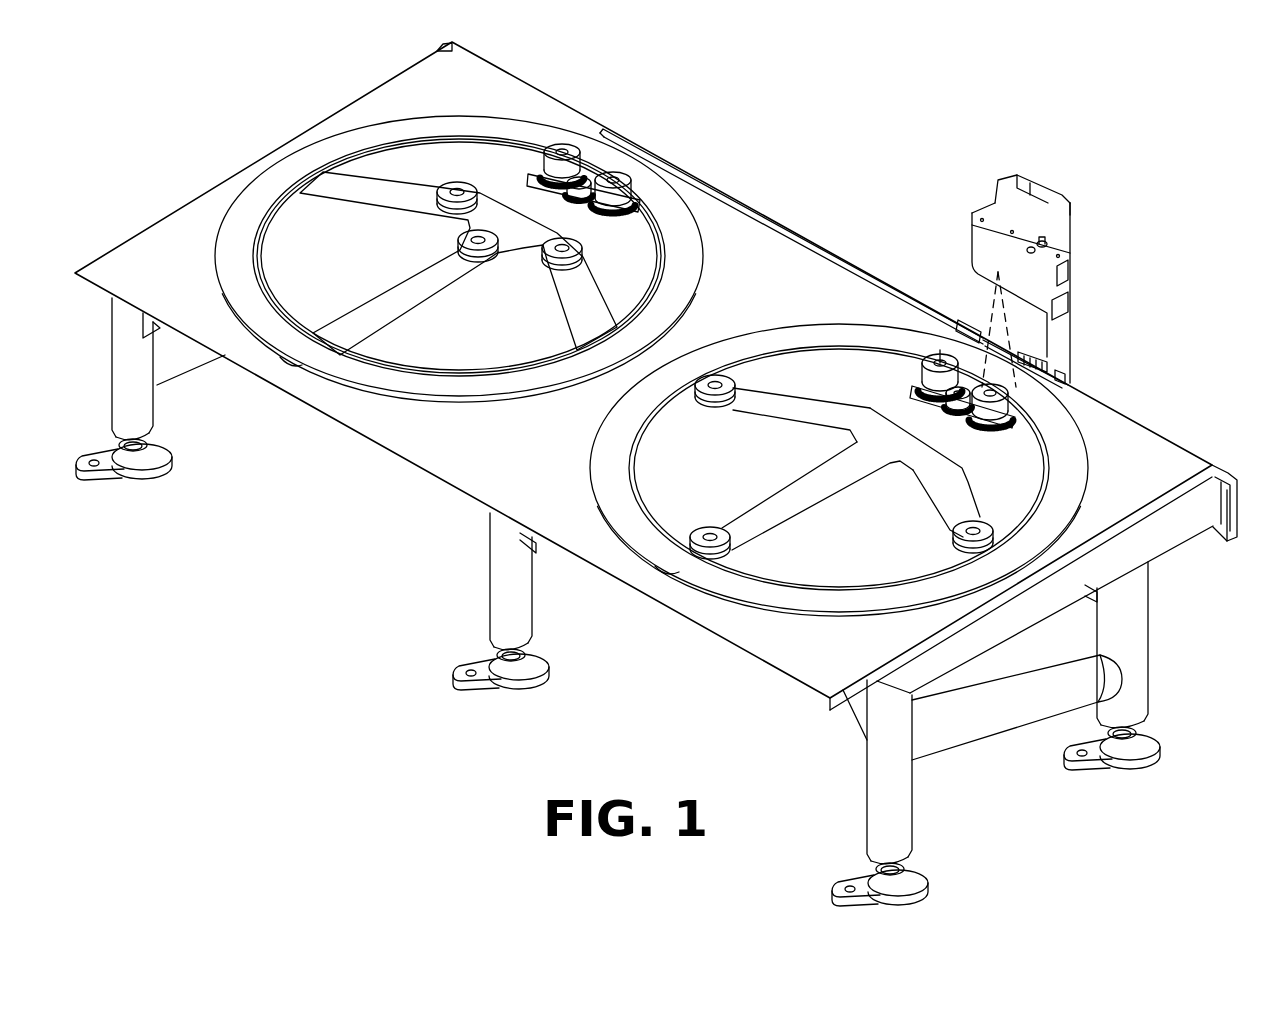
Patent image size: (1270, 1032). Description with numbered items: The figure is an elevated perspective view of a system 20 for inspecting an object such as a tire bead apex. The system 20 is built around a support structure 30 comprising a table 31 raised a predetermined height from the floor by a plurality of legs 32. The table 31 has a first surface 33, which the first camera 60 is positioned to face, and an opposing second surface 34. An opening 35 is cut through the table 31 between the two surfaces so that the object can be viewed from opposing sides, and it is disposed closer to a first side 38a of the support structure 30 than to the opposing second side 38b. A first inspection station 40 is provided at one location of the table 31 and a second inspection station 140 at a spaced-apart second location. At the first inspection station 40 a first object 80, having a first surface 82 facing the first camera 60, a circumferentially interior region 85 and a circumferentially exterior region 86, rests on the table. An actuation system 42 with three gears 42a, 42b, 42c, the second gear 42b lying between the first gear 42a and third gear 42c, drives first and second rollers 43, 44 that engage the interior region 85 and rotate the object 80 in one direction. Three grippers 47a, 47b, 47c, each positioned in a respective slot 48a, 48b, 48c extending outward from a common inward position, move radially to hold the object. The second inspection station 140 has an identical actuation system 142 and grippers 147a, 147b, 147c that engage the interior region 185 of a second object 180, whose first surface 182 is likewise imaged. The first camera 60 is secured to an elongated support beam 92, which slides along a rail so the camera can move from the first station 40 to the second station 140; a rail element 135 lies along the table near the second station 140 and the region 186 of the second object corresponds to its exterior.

The system 20 is at (245, 125).
The support structure 30 is at (643, 376).
The table 31 is at (126, 262).
The legs 32 is at (152, 404).
The first surface 33 is at (355, 427).
The second surface 34 is at (378, 457).
The opening 35 is at (1073, 372).
The first side 38a is at (1208, 470).
The second side 38b is at (830, 702).
The first inspection station 40 is at (883, 445).
The actuation system 42 is at (941, 375).
The first gear 42a is at (992, 420).
The second gear 42b is at (948, 402).
The third gear 42c is at (920, 385).
The first roller 43 is at (1008, 428).
The second roller 44 is at (940, 352).
The gripper 47a is at (955, 540).
The gripper 47b is at (706, 527).
The gripper 47c is at (716, 402).
The slot 48a is at (940, 505).
The slot 48b is at (772, 512).
The slot 48c is at (785, 410).
The first camera 60 is at (1061, 281).
The first object 80 is at (883, 470).
The first surface 82 is at (1068, 497).
The circumferentially interior region 85 is at (1020, 520).
The circumferentially exterior region 86 is at (1068, 530).
The elongated support beam 92 is at (1078, 340).
The guide rail 135 is at (622, 148).
The second inspection station 140 is at (489, 224).
The actuation system 142 is at (566, 136).
The gripper 147a is at (556, 265).
The gripper 147b is at (462, 238).
The gripper 147c is at (448, 194).
The second object 180 is at (489, 259).
The first surface 182 is at (690, 278).
The interior region 185 is at (648, 293).
The ring outer wall 186 is at (692, 312).